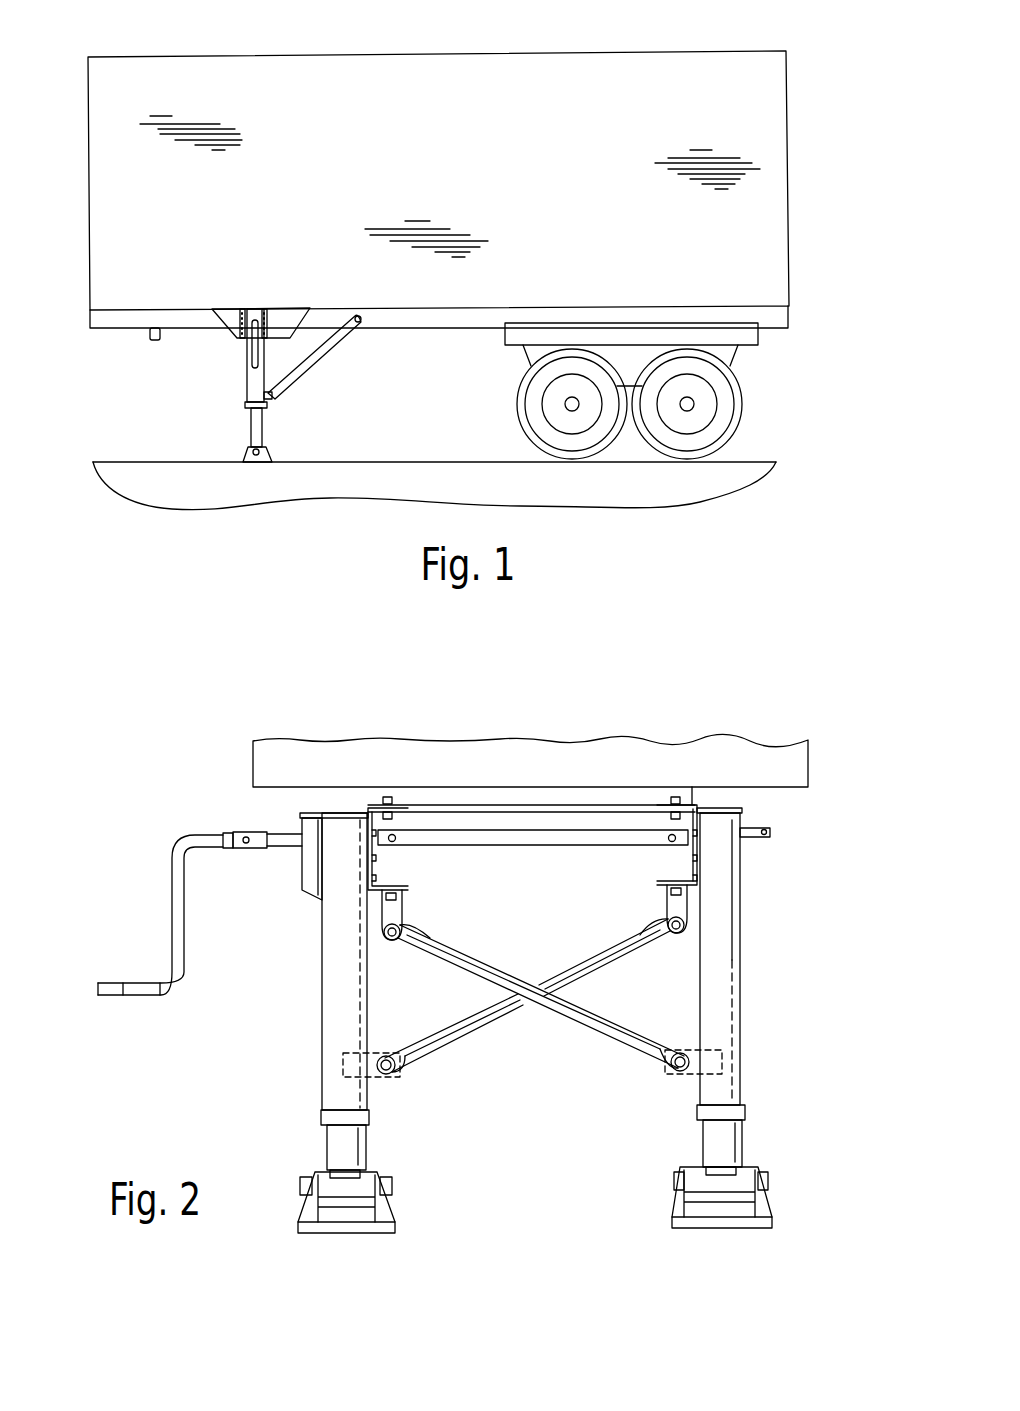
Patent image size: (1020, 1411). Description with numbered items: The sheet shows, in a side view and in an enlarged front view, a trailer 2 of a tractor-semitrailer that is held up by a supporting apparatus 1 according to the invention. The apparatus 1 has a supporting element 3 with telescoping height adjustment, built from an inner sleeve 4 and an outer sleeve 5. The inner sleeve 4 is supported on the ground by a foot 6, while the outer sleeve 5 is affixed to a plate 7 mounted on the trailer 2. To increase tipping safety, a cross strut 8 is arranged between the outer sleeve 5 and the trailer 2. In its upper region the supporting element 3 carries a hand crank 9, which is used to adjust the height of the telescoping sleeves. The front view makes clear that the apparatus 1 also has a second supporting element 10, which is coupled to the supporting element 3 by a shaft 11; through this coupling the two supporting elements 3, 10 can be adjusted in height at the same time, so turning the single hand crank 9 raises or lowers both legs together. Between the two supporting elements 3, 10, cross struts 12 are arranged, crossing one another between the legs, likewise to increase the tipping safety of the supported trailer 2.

In FIG. 1, the apparatus 1 is at (252, 389).
In FIG. 2, the apparatus 1 is at (472, 1010).
In FIG. 1, the trailer 2 is at (121, 87).
In FIG. 2, the trailer 2 is at (277, 763).
In FIG. 1, the supporting element 3 is at (266, 414).
In FIG. 2, the supporting element 3 is at (320, 995).
In FIG. 1, the inner sleeve 4 is at (262, 434).
In FIG. 1, the outer sleeve 5 is at (250, 392).
In FIG. 1, the foot 6 is at (257, 463).
In FIG. 1, the plate 7 is at (282, 321).
In FIG. 1, the cross strut 8 is at (320, 359).
In FIG. 1, the hand crank 9 is at (253, 358).
In FIG. 2, the hand crank 9 is at (173, 912).
In FIG. 2, the second supporting element 10 is at (745, 985).
In FIG. 2, the shaft 11 is at (566, 836).
In FIG. 2, the cross struts 12 is at (585, 968).